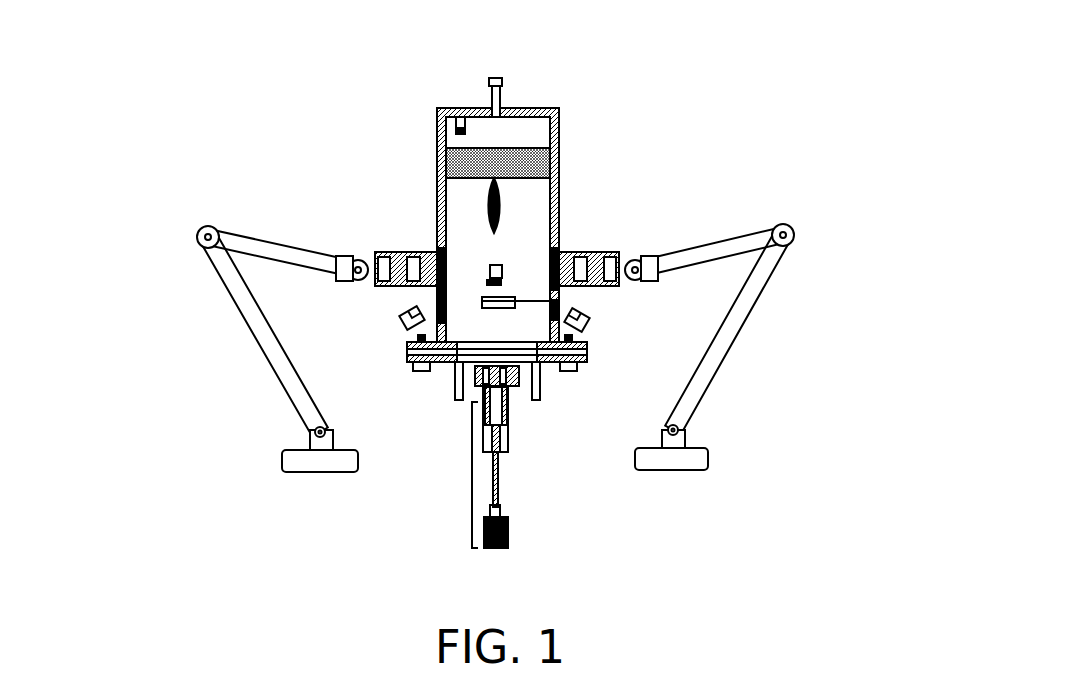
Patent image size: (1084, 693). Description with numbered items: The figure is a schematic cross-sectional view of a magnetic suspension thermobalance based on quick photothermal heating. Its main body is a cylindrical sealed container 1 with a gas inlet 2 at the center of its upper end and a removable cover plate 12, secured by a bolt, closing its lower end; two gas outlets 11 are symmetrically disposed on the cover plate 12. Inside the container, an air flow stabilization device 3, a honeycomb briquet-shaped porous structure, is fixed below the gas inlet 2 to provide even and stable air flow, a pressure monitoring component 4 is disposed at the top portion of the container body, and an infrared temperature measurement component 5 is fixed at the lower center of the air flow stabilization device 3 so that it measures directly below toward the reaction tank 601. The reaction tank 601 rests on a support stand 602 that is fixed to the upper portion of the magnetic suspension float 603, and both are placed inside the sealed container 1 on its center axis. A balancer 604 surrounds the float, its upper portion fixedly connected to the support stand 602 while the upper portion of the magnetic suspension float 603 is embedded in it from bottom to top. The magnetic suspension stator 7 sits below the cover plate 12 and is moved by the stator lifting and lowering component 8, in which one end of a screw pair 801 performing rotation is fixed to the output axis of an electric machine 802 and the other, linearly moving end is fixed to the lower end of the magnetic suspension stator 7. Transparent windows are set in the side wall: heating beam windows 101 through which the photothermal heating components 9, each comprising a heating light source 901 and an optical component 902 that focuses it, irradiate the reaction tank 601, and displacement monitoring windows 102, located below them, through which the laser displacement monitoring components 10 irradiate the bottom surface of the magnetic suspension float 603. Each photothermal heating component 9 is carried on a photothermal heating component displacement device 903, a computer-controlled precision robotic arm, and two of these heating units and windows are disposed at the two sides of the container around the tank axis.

The sealed container 1 is at (555, 143).
The gas inlet 2 is at (500, 84).
The air flow stabilization device 3 is at (530, 170).
The pressure monitoring component 4 is at (465, 131).
The infrared temperature measurement component 5 is at (500, 201).
The magnetic suspension stator 7 is at (478, 385).
The stator lifting and lowering component 8 is at (472, 478).
The photothermal heating component 9 is at (592, 330).
The laser displacement monitoring component 10 is at (700, 385).
The gas outlet 11 is at (462, 378).
The cover plate 12 is at (568, 370).
The heating beam window 101 is at (390, 253).
The displacement monitoring window 102 is at (405, 312).
The reaction tank 601 is at (488, 272).
The support stand 602 is at (490, 284).
The magnetic suspension float 603 is at (372, 265).
The balancer 604 is at (482, 299).
The screw pair 801 is at (504, 455).
The electric machine 802 is at (507, 525).
The heating light source 901 is at (645, 272).
The optical component 902 is at (600, 292).
The photothermal heating component displacement device 903 is at (592, 332).